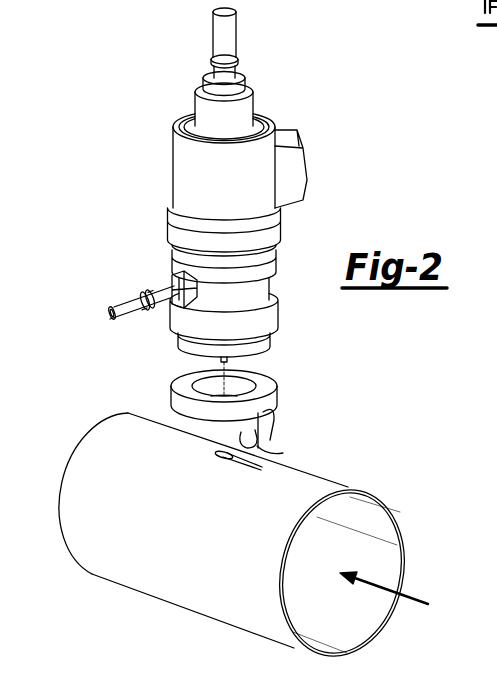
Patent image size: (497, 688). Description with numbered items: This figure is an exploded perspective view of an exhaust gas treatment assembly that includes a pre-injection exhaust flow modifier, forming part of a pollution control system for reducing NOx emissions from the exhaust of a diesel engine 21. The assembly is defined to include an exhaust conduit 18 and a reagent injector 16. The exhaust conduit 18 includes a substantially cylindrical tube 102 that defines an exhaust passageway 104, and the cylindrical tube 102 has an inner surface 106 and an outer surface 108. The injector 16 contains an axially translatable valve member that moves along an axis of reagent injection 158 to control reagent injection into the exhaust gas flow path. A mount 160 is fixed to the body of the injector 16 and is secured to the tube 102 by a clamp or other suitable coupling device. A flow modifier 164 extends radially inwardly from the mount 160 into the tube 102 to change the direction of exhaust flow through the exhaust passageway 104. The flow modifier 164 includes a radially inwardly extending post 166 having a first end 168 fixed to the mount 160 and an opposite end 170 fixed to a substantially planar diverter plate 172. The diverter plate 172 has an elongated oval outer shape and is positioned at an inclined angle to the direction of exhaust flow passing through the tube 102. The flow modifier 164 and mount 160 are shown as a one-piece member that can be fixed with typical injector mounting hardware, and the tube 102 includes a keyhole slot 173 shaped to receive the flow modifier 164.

The reagent injector 16 is at (290, 94).
The exhaust conduit 18 is at (347, 488).
The diesel engine 21 is at (16, 0).
The cylindrical tube 102 is at (103, 428).
The exhaust passageway 104 is at (338, 557).
The inner surface 106 is at (340, 633).
The outer surface 108 is at (158, 583).
The axis of reagent injection 158 is at (197, 375).
The mount 160 is at (270, 383).
The flow modifier 164 is at (284, 419).
The post 166 is at (257, 432).
The first end 168 is at (264, 412).
The opposite end 170 is at (262, 452).
The diverter plate 172 is at (237, 437).
The keyhole slot 173 is at (215, 453).